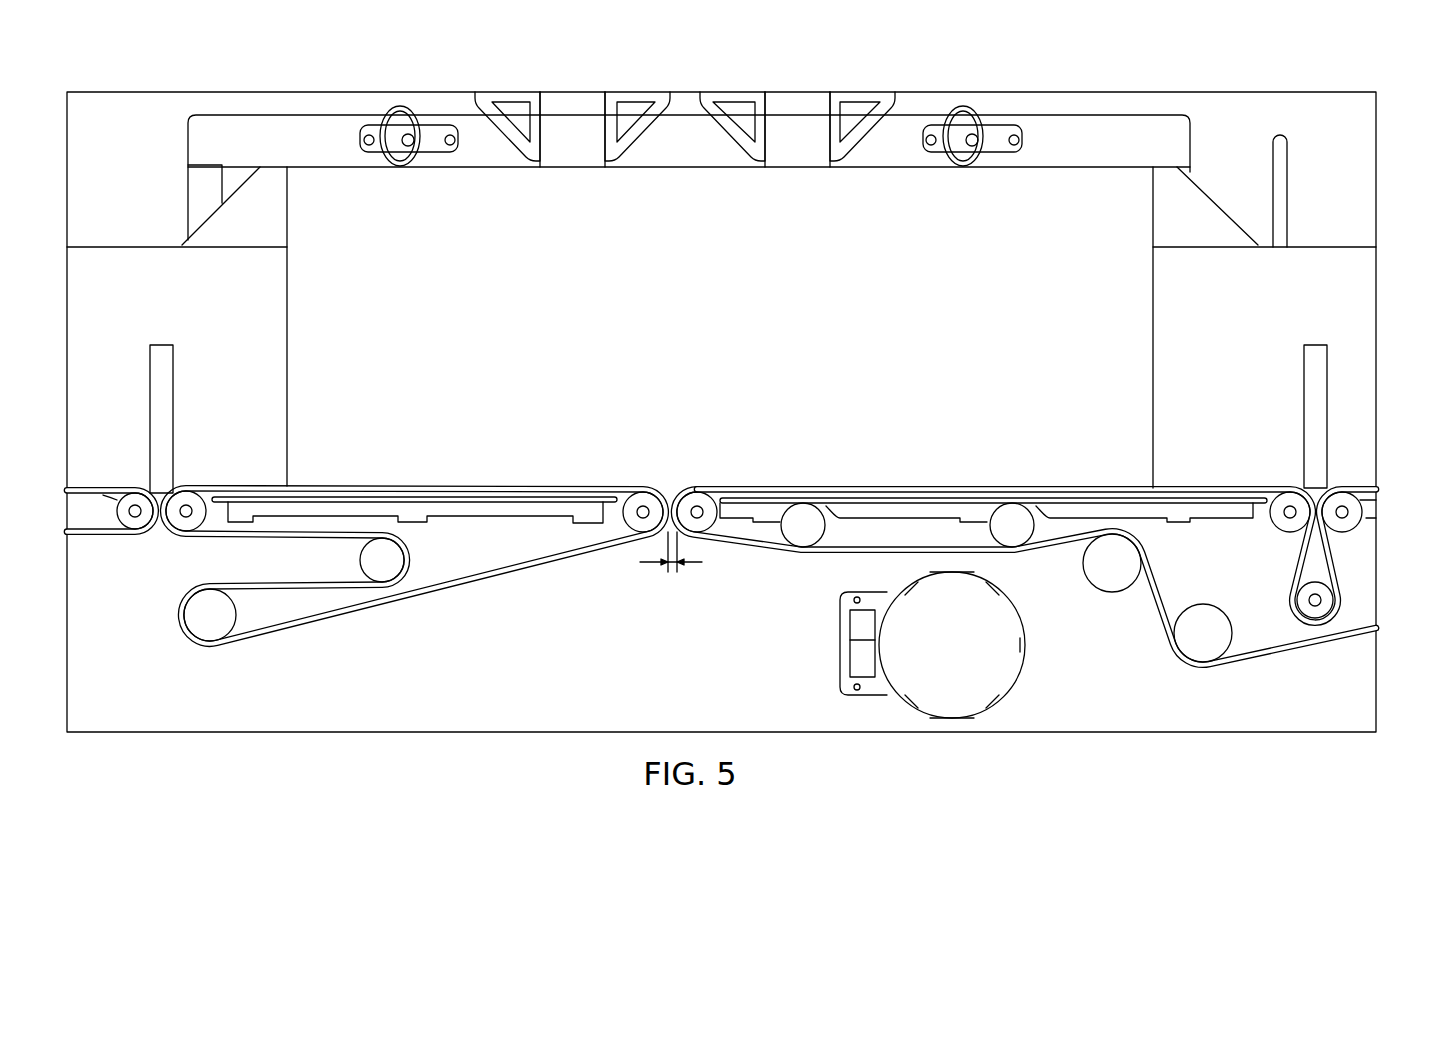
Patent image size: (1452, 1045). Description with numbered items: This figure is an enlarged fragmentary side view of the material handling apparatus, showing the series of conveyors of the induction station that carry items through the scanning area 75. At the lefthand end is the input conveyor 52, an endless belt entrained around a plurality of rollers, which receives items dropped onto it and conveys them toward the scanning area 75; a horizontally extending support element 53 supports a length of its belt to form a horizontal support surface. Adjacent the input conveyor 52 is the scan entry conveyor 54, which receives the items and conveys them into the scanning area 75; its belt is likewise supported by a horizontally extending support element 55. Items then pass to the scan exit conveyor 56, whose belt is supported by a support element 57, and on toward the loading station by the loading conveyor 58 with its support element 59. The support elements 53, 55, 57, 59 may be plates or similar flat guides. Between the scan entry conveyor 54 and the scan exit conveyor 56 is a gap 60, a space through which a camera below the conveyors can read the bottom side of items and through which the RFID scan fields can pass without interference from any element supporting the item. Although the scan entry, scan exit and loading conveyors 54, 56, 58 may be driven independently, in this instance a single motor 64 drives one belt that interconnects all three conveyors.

The input conveyor 52 is at (100, 534).
The support element 53 is at (83, 487).
The scan entry conveyor 54 is at (455, 486).
The support element 55 is at (541, 496).
The scan exit conveyor 56 is at (848, 487).
The support element 57 is at (935, 498).
The loading conveyor 58 is at (1353, 487).
The support element 59 is at (1372, 518).
The gap 60 is at (650, 564).
The motor 64 is at (938, 656).
The scanning area 75 is at (677, 337).